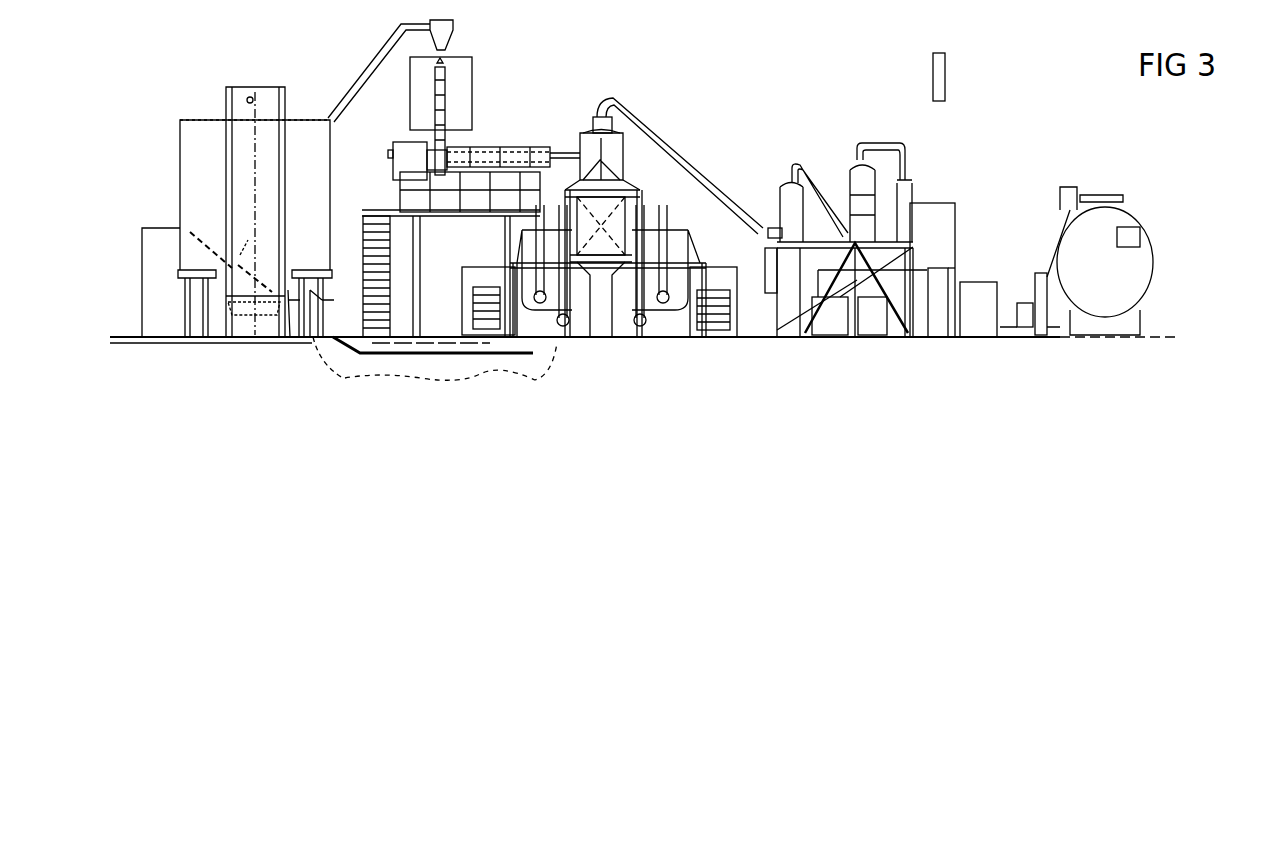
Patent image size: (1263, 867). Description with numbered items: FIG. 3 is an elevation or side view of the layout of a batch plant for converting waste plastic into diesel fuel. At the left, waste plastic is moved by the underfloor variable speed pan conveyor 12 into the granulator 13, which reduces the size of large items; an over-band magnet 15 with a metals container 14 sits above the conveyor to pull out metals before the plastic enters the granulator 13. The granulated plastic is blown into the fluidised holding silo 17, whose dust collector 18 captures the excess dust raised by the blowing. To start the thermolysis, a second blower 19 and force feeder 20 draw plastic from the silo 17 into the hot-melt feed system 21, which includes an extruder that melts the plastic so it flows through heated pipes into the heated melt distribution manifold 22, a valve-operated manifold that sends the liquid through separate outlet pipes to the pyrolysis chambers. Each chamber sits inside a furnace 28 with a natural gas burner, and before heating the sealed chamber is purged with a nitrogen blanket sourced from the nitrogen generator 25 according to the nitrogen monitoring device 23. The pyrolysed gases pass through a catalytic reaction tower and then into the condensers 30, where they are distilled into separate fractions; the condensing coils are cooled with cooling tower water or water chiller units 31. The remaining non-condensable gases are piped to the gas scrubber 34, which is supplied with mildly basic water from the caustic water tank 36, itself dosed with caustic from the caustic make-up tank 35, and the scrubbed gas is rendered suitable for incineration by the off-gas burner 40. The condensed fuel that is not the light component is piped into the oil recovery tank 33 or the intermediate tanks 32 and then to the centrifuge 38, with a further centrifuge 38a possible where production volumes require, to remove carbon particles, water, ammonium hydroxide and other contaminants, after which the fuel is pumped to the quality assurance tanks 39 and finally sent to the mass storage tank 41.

The conveyor 12 is at (493, 357).
The granulator 13 is at (152, 242).
The metals container 14 is at (320, 330).
The magnet 15 is at (286, 225).
The fluidised silo 17 is at (192, 208).
The dust collector 18 is at (243, 250).
The blower 19 is at (366, 74).
The force feeder 20 is at (446, 77).
The hot melt feed 21 is at (402, 144).
The hot melt manifold 22 is at (583, 143).
The nitrogen monitoring device 23 is at (618, 150).
The nitrogen generator 25 is at (887, 302).
The furnace 28 is at (580, 340).
The condenser 30 is at (668, 282).
The chiller unit 31 is at (853, 330).
The intermediate tank 32 is at (760, 330).
The oil recovery tank 33 is at (773, 330).
The gas scrubber 34 is at (712, 300).
The caustic make up tank 35 is at (817, 330).
The caustic water tank 36 is at (870, 325).
The centrifuge 38 is at (938, 305).
The valve box 38a is at (913, 297).
The quality assurance tank 39 is at (982, 313).
The off gas burner 40 is at (940, 70).
The storage tank 41 is at (1092, 288).